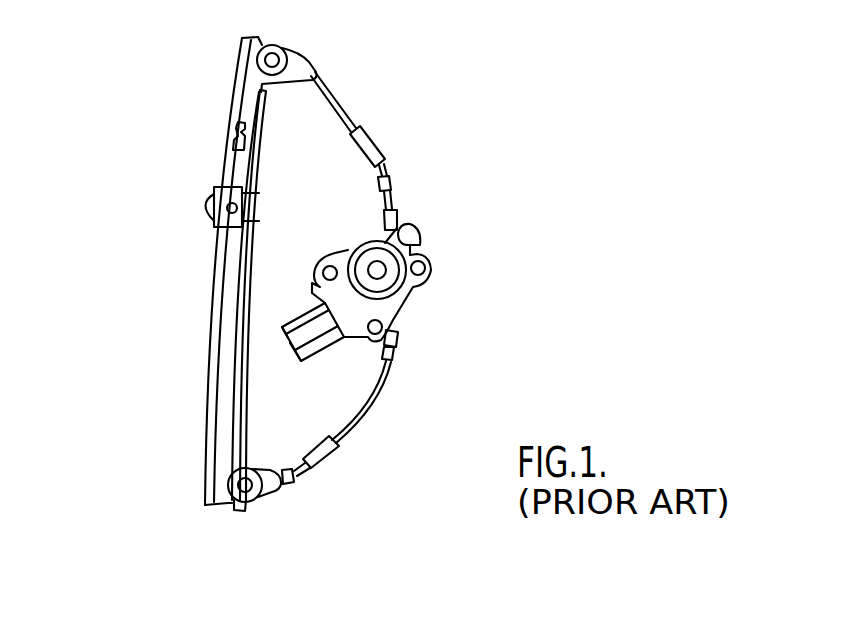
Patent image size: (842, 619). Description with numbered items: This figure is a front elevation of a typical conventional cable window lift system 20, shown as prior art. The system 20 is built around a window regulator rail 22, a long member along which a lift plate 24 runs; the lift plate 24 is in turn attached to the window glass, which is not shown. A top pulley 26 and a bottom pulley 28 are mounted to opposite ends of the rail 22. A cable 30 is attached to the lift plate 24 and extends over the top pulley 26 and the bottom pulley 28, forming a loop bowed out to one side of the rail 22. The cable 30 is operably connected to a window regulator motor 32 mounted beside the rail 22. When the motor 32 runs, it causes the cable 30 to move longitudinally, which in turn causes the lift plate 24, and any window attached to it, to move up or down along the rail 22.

The cable window lift system 20 is at (205, 330).
The window regulator rail 22 is at (203, 413).
The lift plate 24 is at (199, 203).
The top pulley 26 is at (284, 55).
The bottom pulley 28 is at (250, 500).
The cable 30 is at (368, 403).
The window regulator motor 32 is at (368, 250).